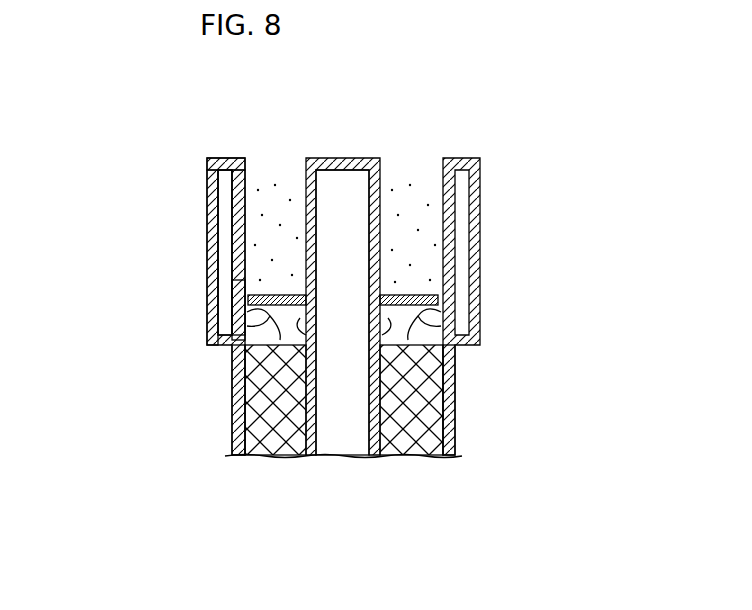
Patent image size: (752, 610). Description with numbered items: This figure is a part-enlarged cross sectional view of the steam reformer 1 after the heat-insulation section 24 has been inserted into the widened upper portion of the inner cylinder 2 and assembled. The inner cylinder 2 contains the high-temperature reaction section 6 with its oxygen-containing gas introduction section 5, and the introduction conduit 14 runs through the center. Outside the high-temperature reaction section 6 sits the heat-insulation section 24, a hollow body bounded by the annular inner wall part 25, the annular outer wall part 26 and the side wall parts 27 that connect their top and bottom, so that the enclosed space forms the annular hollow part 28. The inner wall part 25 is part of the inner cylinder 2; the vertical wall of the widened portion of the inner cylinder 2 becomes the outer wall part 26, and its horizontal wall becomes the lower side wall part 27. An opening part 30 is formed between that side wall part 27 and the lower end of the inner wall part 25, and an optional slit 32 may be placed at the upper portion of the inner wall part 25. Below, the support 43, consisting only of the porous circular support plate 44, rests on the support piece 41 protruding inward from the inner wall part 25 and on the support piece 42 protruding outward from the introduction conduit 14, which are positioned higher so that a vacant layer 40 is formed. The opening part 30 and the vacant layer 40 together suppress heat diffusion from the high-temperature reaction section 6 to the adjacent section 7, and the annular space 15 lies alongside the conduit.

The steam reformer 1 is at (163, 186).
The inner cylinder 2 is at (458, 434).
The oxygen-containing gas introduction section 5 is at (355, 272).
The high-temperature reaction section 6 is at (420, 225).
The adjacent section 7 is at (288, 425).
The introduction conduit 14 is at (343, 158).
The annular space 15 is at (382, 255).
The heat-insulation section 24 is at (203, 179).
The inner wall part 25 is at (237, 257).
The outer wall part 26 is at (233, 297).
The side wall part 27 is at (225, 158).
The annular hollow part 28 is at (225, 230).
The opening part 30 is at (245, 365).
The opening part (slit) 32 is at (257, 187).
The vacant layer 40 is at (280, 332).
The support piece 41 is at (250, 322).
The support piece 42 is at (383, 320).
The support 43 is at (252, 297).
The porous circular support plate 44 is at (291, 292).